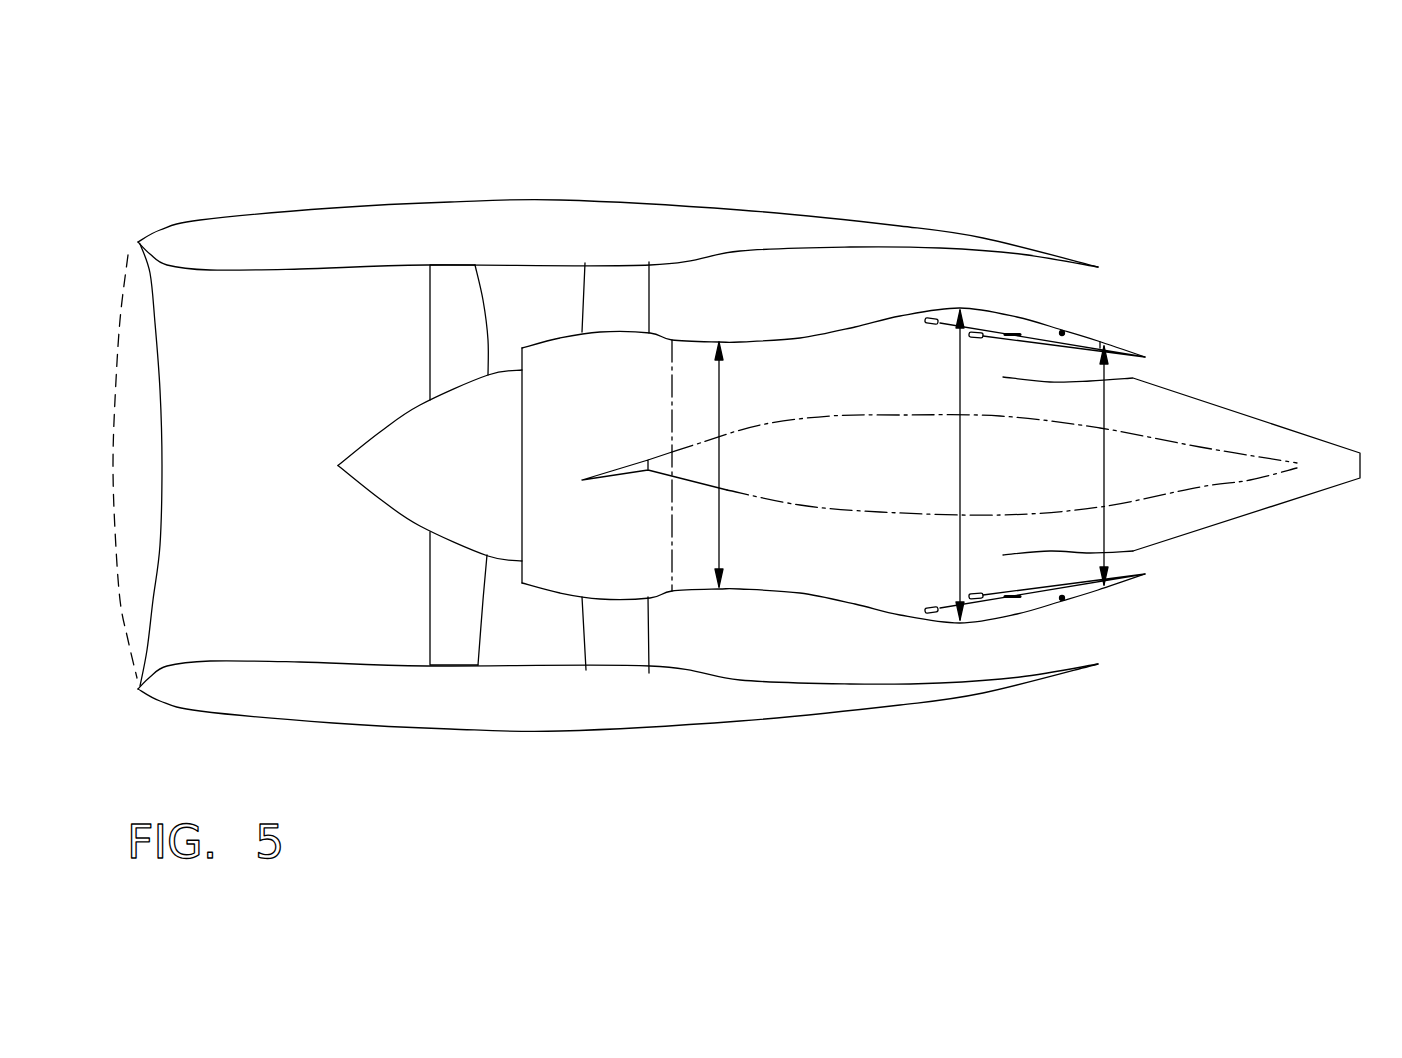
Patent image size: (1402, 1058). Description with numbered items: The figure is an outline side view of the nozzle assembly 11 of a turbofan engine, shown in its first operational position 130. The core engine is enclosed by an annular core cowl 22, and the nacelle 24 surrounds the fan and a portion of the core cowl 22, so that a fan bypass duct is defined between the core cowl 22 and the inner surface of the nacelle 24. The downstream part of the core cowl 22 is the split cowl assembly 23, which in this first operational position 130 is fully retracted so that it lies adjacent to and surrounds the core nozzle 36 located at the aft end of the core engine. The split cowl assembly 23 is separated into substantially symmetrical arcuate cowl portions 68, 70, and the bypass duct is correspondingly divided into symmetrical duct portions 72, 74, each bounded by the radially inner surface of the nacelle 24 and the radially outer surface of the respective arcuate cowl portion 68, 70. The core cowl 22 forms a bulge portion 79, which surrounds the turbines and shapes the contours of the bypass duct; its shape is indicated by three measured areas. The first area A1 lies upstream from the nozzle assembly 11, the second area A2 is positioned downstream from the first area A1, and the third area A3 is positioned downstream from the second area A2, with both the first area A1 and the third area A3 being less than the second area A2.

The nozzle assembly 11 is at (736, 408).
The core cowl 22 is at (833, 432).
The split cowl assembly 23 is at (855, 327).
The nacelle 24 is at (983, 238).
The core nozzle 36 is at (1156, 368).
The arcuate cowl portion 68 is at (1017, 317).
The arcuate cowl portion 70 is at (878, 608).
The duct portion 72 is at (1138, 306).
The duct portion 74 is at (1126, 618).
The bulge portion 79 is at (960, 289).
The first operational position 130 is at (1167, 332).
The first area A1 is at (719, 410).
The second area A2 is at (960, 557).
The third area A3 is at (1105, 533).